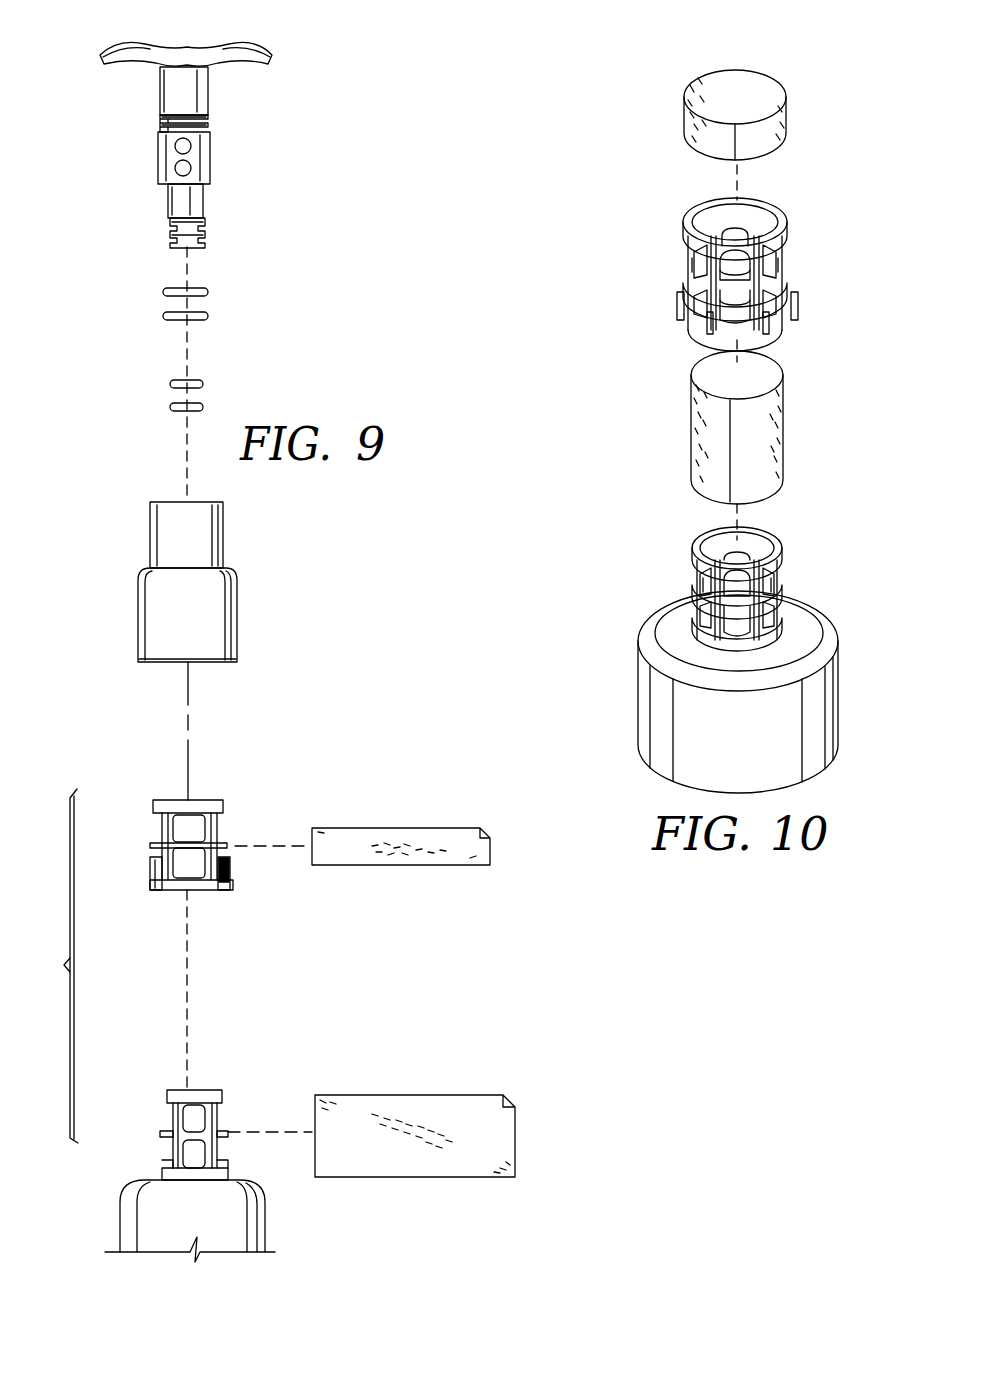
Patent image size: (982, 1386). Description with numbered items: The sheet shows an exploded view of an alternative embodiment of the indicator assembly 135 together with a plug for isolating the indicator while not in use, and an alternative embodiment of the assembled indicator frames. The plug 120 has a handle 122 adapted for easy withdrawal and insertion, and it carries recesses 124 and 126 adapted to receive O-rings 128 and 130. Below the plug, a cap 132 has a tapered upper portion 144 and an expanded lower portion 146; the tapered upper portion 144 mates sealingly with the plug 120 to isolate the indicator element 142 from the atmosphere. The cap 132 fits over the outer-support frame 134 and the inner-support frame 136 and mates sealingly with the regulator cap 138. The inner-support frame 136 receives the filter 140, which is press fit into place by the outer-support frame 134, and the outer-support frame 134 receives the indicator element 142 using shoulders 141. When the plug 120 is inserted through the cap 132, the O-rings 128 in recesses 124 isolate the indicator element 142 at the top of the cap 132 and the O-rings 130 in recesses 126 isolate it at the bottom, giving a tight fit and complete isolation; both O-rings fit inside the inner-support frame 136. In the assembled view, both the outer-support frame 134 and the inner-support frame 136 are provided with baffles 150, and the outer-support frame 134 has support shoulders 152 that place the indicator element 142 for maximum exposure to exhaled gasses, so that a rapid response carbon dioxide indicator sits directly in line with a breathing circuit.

In FIG. 9, the plug 120 is at (209, 104).
In FIG. 9, the handle 122 is at (268, 33).
In FIG. 9, the recess 124 is at (160, 126).
In FIG. 9, the recess 126 is at (170, 242).
In FIG. 9, the O-ring 128 is at (163, 316).
In FIG. 9, the O-ring 130 is at (170, 407).
In FIG. 9, the cap 132 is at (238, 600).
In FIG. 9, the outer-support frame 134 is at (180, 861).
In FIG. 10, the outer-support frame 134 is at (768, 283).
In FIG. 9, the indicator assembly 135 is at (51, 966).
In FIG. 9, the inner-support frame 136 is at (166, 1096).
In FIG. 10, the inner-support frame 136 is at (785, 566).
In FIG. 9, the regulator cap 138 is at (140, 1180).
In FIG. 9, the filter 140 is at (516, 1140).
In FIG. 10, the filter 140 is at (786, 431).
In FIG. 9, the shoulder 141 is at (168, 890).
In FIG. 9, the indicator element 142 is at (491, 852).
In FIG. 10, the indicator element 142 is at (788, 120).
In FIG. 9, the tapered upper portion 144 is at (226, 540).
In FIG. 9, the expanded lower portion 146 is at (138, 655).
In FIG. 10, the baffle 150 is at (684, 265).
In FIG. 10, the support shoulder 152 is at (793, 318).